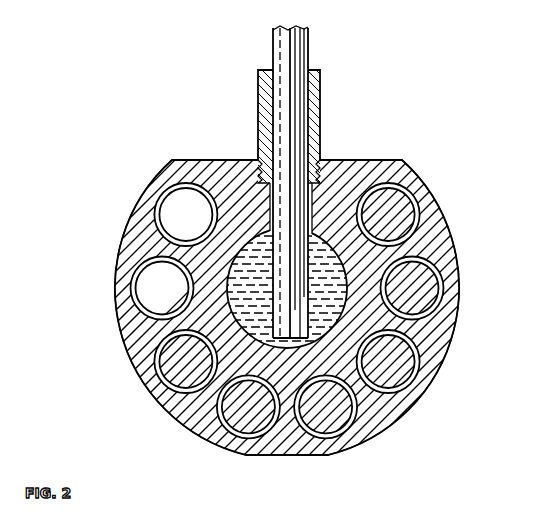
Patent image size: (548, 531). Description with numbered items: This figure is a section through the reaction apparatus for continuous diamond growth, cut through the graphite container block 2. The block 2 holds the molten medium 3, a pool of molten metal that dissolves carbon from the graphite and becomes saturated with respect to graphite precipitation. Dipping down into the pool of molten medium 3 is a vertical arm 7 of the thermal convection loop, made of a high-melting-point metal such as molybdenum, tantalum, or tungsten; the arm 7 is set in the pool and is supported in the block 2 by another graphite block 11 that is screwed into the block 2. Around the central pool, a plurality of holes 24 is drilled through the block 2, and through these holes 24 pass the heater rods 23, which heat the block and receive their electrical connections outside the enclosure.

The graphite block 2 is at (433, 351).
The molten medium 3 is at (252, 257).
The vertical arm 7 is at (300, 42).
The block 11 is at (315, 135).
The heater rods 23 is at (418, 293).
The holes 24 is at (396, 388).